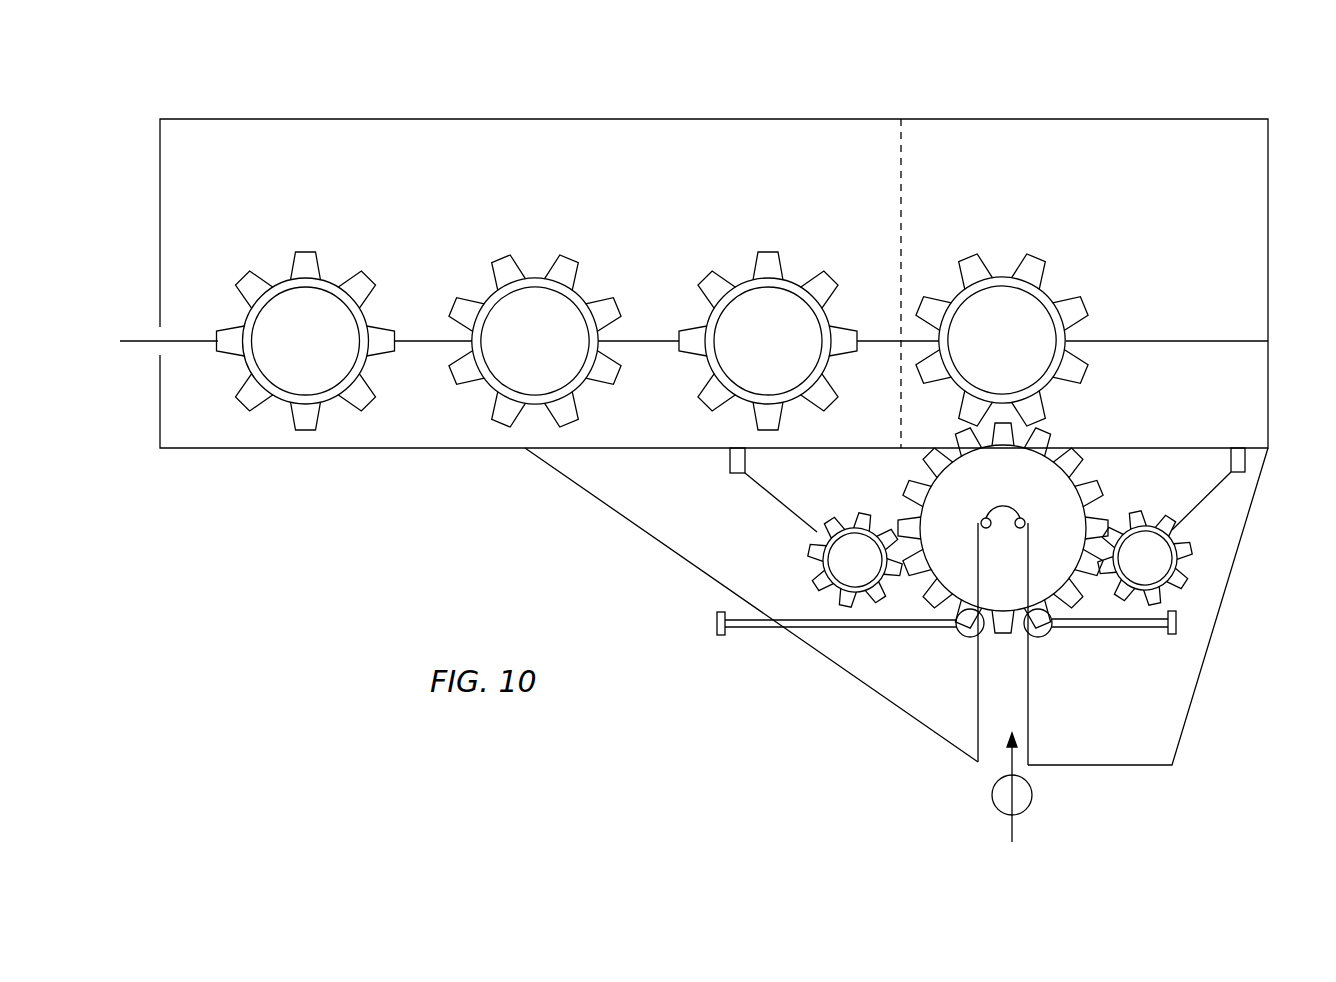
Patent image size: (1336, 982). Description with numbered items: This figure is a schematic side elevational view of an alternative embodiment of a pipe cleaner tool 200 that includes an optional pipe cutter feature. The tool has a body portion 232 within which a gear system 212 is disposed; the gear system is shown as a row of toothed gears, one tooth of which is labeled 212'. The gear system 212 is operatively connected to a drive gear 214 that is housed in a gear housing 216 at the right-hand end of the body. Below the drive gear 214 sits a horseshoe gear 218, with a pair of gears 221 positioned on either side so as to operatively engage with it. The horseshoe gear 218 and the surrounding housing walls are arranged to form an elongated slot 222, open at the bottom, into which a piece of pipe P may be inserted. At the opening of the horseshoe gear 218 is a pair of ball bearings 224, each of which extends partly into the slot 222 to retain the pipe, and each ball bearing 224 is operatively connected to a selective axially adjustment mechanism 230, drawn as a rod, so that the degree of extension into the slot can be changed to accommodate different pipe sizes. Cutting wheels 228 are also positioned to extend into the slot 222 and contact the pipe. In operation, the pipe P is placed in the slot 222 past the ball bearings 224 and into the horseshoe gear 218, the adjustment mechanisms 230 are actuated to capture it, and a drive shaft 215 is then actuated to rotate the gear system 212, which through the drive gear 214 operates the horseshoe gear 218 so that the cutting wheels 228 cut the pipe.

The pipe cleaner tool 200 is at (467, 553).
The gear system 212 is at (528, 305).
The gear tooth 212' is at (297, 325).
The drive gear 214 is at (970, 265).
The drive shaft 215 is at (137, 338).
The gear housing 216 is at (1230, 127).
The horseshoe gear 218 is at (1073, 462).
The gears 221 is at (812, 560).
The elongated slot 222 is at (1004, 660).
The ball bearings 224 is at (972, 636).
The cutting wheels 228 is at (984, 517).
The selective axially adjustment mechanism 230 is at (750, 638).
The body portion 232 is at (213, 130).
The pill P is at (1012, 806).